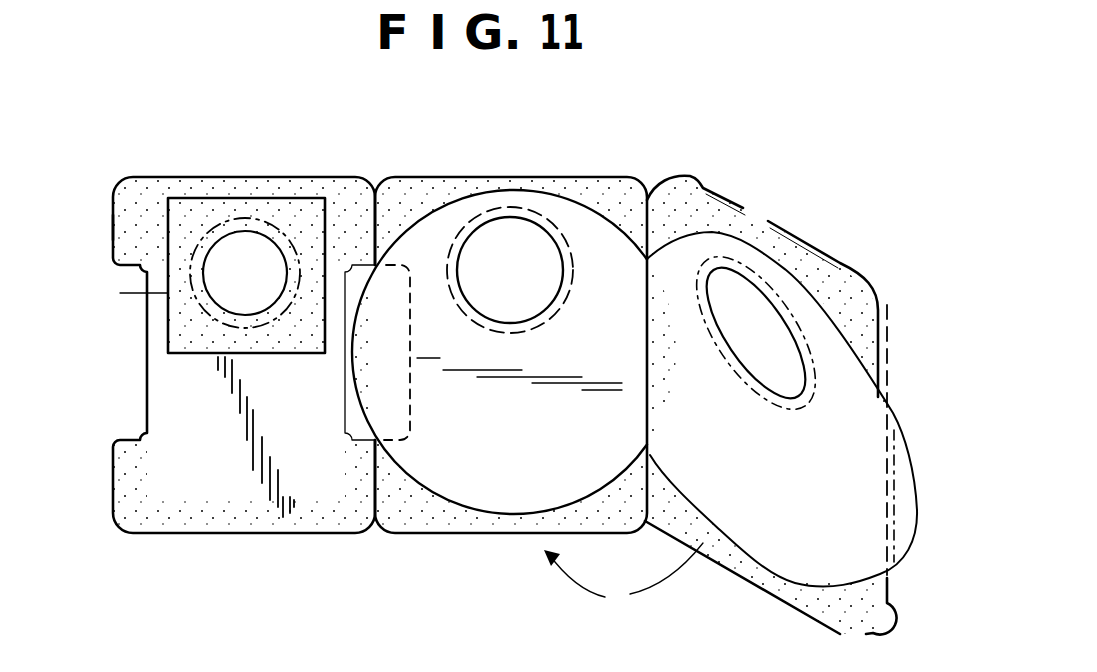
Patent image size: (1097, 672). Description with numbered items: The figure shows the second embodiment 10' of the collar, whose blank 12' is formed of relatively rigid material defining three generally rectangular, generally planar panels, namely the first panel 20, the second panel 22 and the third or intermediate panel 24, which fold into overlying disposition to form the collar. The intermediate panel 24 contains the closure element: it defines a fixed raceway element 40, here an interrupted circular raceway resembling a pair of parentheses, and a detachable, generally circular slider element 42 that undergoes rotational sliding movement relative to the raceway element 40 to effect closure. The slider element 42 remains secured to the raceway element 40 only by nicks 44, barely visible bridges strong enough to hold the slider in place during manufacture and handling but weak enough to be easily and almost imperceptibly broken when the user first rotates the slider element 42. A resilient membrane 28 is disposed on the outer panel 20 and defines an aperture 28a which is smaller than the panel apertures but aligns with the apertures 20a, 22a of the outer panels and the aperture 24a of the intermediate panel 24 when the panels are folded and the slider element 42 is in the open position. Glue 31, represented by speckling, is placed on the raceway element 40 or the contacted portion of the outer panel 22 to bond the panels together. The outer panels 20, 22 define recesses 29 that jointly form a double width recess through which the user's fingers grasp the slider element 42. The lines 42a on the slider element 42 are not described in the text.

The second embodiment 10' is at (173, 112).
The blank 12' is at (642, 115).
The first panel 20 is at (180, 538).
The aperture 20a is at (257, 200).
The second panel 22 is at (468, 537).
The aperture 22a is at (490, 208).
The third or intermediate panel 24 is at (892, 668).
The aperture 24a is at (545, 288).
The resilient membrane 28 is at (120, 293).
The aperture 28a is at (275, 287).
The recesses 29 is at (135, 409).
The glue 31 is at (126, 219).
The raceway element 40 is at (428, 203).
The slider element 42 is at (602, 455).
The score lines 42a is at (656, 313).
The nicks 44 is at (376, 262).